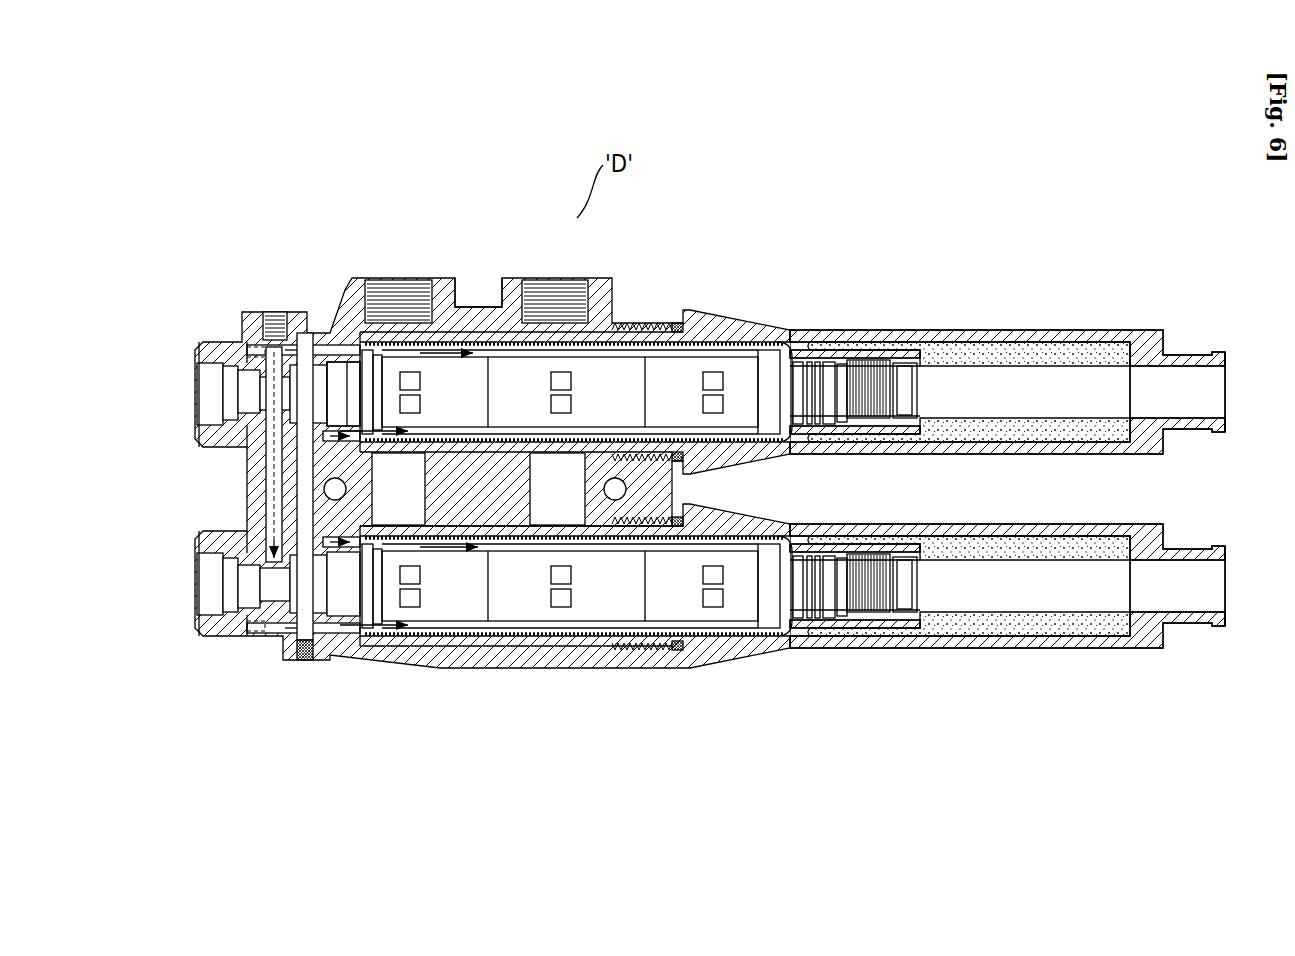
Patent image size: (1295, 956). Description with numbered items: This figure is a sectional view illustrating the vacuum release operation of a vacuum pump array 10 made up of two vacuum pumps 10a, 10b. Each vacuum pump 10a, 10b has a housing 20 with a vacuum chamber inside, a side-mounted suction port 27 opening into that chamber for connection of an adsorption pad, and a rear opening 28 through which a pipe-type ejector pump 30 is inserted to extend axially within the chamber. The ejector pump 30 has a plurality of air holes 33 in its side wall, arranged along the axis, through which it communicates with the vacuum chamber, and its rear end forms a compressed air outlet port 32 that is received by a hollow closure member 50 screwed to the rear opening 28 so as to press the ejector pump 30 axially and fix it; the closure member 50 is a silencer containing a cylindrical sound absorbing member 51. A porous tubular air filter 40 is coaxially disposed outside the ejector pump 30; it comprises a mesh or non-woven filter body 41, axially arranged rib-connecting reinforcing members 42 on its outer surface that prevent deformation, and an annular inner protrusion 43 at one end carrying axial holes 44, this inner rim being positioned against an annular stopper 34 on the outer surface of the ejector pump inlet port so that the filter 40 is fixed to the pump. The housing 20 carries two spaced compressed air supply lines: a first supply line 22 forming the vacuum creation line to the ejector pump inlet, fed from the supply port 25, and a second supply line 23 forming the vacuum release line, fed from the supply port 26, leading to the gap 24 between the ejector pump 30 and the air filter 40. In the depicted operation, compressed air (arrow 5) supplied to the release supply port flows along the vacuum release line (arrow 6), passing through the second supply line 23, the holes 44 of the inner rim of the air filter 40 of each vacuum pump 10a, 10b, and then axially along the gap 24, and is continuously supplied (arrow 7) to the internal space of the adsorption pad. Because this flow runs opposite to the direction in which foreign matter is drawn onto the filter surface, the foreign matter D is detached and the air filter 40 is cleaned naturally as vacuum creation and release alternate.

The vacuum pump array 10 is at (225, 194).
The vacuum pump 10a is at (660, 293).
The vacuum pump 10b is at (648, 690).
The housing 20 is at (262, 640).
The first supply line 22 is at (300, 470).
The second supply line 23 is at (300, 512).
The gap 24 is at (432, 335).
The compressed air supply port 25 is at (197, 610).
The compressed air supply port 26 is at (197, 343).
The suction port 27 is at (368, 282).
The rear opening 28 is at (653, 645).
The ejector pump 30 is at (680, 352).
The compressed air outlet port 32 is at (917, 390).
The air holes 33 is at (712, 388).
The annular stopper 34 is at (380, 417).
The air filter 40 is at (720, 332).
The filter body 41 is at (629, 322).
The rib-connecting reinforcing member 42 is at (522, 310).
The annular inner protrusion 43 is at (380, 640).
The holes 44 is at (345, 335).
The closure member 50 is at (1090, 327).
The sound absorbing member 51 is at (1023, 350).
The compressed air arrow 5 is at (220, 393).
The vacuum release line arrow 6 is at (487, 342).
The supply arrow 7 is at (572, 222).